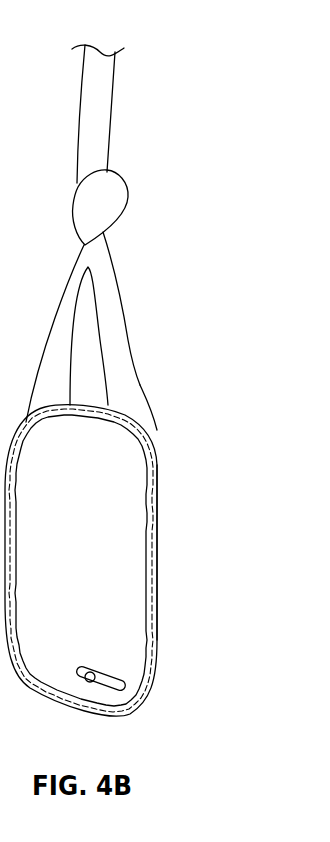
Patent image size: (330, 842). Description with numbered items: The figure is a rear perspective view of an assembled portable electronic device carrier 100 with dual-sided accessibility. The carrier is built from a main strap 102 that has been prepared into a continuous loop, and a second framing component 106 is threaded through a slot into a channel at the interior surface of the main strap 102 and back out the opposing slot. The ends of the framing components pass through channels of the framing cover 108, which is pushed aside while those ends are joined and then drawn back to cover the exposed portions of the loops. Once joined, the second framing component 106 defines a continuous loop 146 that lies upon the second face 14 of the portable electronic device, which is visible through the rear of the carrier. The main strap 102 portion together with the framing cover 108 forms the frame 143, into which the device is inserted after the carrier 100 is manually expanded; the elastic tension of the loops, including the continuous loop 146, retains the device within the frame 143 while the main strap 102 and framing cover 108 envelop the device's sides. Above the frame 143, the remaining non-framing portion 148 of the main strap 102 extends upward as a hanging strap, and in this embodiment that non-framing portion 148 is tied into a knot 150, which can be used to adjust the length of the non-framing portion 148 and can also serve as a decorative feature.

The portable electronic device carrier 100 is at (174, 306).
The knot 150 is at (118, 195).
The non-framing portion 148 is at (103, 273).
The framing cover 108 is at (123, 413).
The main strap 102 is at (150, 441).
The second framing component 106 is at (150, 473).
The continuous loop 146 is at (153, 510).
The frame 143 is at (163, 580).
The second face 14 is at (99, 583).